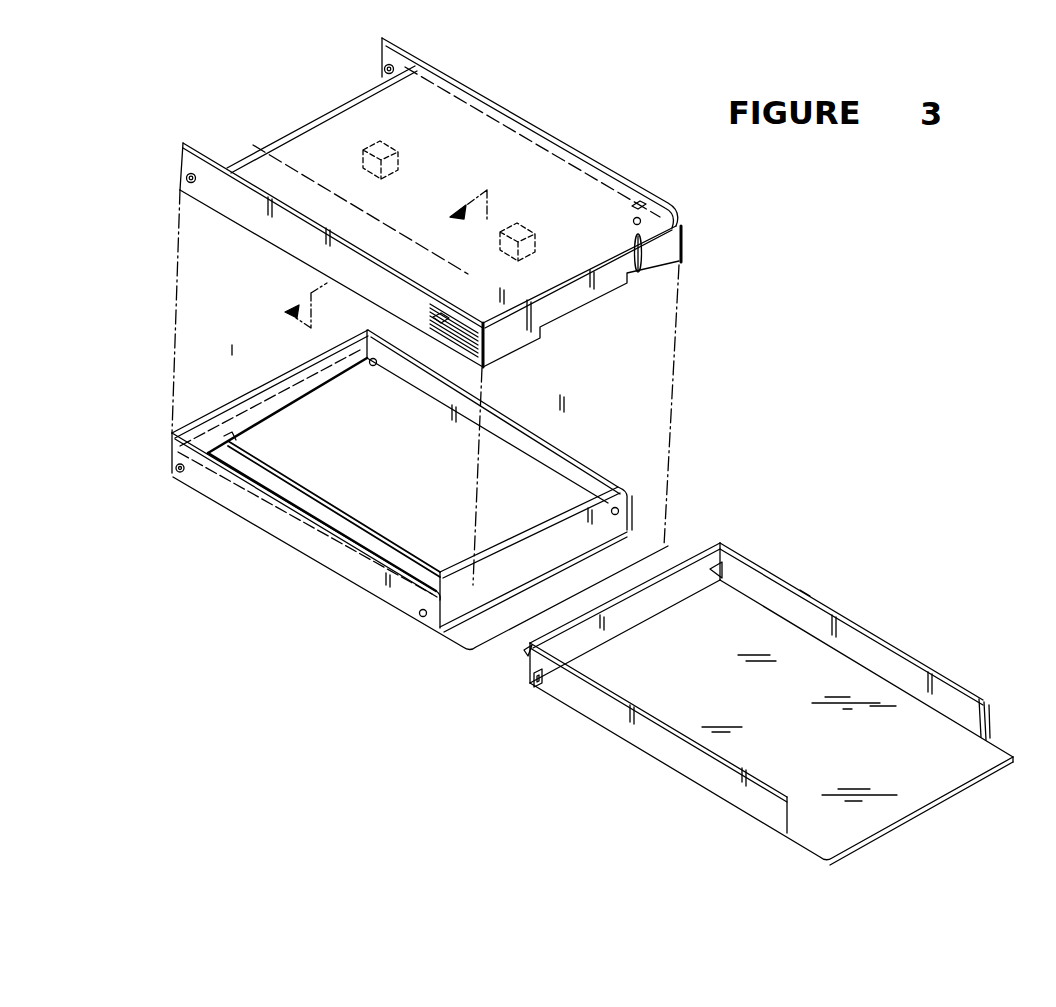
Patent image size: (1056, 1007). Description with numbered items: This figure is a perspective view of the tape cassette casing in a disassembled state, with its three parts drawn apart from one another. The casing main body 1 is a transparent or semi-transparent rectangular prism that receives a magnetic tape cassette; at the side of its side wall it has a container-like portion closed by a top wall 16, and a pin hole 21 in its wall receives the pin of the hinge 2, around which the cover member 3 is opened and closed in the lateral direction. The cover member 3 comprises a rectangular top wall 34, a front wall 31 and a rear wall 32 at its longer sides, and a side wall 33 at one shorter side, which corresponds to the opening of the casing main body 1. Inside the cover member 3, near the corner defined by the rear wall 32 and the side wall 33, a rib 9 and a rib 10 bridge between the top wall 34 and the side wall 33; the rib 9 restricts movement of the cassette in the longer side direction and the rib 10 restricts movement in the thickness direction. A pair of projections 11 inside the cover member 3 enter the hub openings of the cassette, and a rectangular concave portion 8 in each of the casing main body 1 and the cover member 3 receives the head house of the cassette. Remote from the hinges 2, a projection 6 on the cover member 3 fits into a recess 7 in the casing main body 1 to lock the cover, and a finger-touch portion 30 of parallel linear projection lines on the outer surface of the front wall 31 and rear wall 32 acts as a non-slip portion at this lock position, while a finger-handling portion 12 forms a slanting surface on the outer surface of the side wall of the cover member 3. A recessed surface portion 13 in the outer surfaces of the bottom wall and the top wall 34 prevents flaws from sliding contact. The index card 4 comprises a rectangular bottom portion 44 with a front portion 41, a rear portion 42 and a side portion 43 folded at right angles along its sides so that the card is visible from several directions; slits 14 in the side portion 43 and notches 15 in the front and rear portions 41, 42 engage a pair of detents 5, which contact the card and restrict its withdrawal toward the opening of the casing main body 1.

The casing main body 1 is at (441, 685).
The hinge 2 is at (176, 184).
The cover member 3 is at (639, 133).
The index card 4 is at (902, 796).
The detent 5 is at (383, 72).
The projection 6 is at (432, 315).
The recess 7 is at (612, 506).
The rectangular concave portion 8 is at (420, 556).
The rib 9 is at (650, 262).
The rib 10 is at (637, 203).
The projection 11 is at (364, 163).
The finger-handling portion 12 is at (570, 478).
The recessed surface portion 13 is at (244, 410).
The slit 14 is at (604, 541).
The notch 15 is at (514, 504).
The top wall 16 is at (330, 402).
The pin hole 21 is at (174, 472).
The finger-touch portion 30 is at (458, 345).
The front wall 31 is at (246, 204).
The rear wall 32 is at (404, 50).
The side wall 33 is at (500, 345).
The top wall 34 is at (548, 152).
The front portion 41 is at (668, 754).
The rear portion 42 is at (892, 662).
The side portion 43 is at (616, 616).
The bottom portion 44 is at (806, 620).